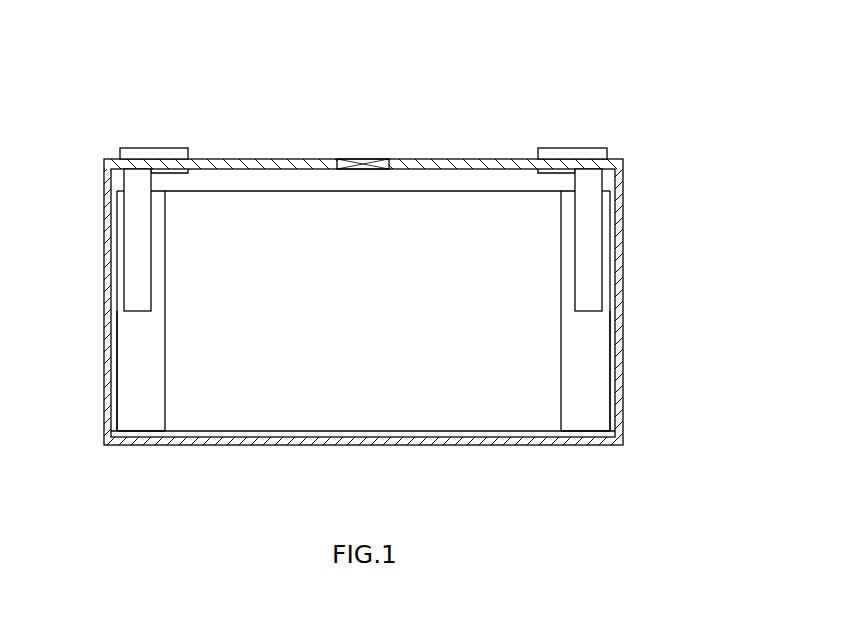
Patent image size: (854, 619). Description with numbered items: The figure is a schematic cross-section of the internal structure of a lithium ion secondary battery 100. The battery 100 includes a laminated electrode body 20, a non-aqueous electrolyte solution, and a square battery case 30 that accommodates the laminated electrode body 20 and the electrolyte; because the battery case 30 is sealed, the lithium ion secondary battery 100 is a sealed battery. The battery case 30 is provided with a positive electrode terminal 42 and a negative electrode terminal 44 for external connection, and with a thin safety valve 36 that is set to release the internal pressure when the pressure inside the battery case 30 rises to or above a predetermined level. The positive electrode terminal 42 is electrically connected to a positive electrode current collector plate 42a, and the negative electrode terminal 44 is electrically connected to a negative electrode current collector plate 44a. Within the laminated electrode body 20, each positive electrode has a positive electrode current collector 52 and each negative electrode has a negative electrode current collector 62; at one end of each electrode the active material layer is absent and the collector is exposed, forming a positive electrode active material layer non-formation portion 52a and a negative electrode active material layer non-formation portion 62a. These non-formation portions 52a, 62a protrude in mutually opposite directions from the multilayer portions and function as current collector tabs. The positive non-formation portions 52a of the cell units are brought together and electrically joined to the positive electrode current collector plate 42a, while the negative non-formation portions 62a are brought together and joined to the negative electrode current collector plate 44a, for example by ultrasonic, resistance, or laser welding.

The lithium ion secondary battery 100 is at (371, 265).
The laminated electrode body 20 is at (348, 382).
The battery case 30 is at (628, 267).
The safety valve 36 is at (371, 158).
The positive electrode terminal 42 is at (168, 147).
The positive electrode current collector plate 42a is at (138, 211).
The negative electrode terminal 44 is at (584, 147).
The negative electrode current collector plate 44a is at (592, 204).
The positive electrode current collector 52 is at (118, 333).
The positive electrode active material layer non-formation portion 52a is at (130, 400).
The negative electrode current collector 62 is at (612, 333).
The negative electrode active material layer non-formation portion 62a is at (592, 397).